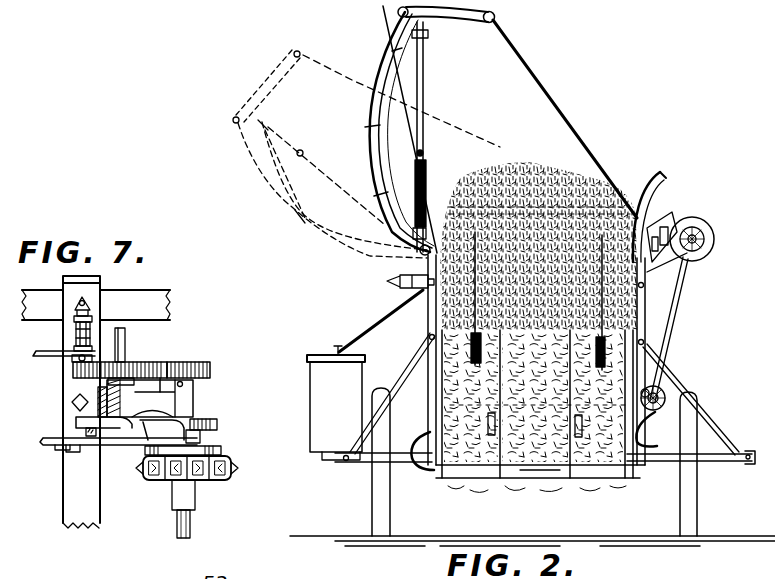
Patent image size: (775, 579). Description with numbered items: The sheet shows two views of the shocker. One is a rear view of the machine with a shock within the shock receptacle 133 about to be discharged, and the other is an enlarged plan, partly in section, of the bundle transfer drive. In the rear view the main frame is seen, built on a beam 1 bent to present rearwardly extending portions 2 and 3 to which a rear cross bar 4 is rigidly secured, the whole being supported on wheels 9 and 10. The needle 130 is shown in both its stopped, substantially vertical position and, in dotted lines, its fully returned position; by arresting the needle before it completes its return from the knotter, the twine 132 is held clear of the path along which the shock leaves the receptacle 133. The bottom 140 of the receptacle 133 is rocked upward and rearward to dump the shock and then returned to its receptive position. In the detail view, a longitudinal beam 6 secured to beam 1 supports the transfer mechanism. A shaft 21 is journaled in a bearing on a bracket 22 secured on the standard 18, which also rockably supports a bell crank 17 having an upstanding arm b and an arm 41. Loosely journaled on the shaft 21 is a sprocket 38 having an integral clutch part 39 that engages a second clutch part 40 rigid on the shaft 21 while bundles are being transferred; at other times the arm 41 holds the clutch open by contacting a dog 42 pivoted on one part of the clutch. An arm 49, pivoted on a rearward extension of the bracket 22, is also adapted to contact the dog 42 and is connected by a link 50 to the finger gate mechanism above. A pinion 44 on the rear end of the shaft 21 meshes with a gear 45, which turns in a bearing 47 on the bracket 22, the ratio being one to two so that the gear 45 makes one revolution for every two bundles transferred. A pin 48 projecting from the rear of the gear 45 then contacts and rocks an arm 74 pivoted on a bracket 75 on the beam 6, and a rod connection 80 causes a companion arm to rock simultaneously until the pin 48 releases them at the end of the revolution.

In FIG. 7, the beam 1 is at (164, 310).
In FIG. 7, the longitudinal beam 6 is at (70, 505).
In FIG. 7, the bracket 75 is at (95, 318).
In FIG. 7, the rod connection 80 is at (47, 352).
In FIG. 7, the arm 74 is at (72, 350).
In FIG. 7, the stud or pin 48 is at (125, 344).
In FIG. 7, the gear 45 is at (148, 366).
In FIG. 7, the bearing 47 is at (133, 407).
In FIG. 7, the pinion 44 is at (210, 366).
In FIG. 7, the bracket 22 is at (162, 403).
In FIG. 7, the standard 18 is at (98, 392).
In FIG. 7, the bell crank 17 is at (76, 419).
In FIG. 7, the upstanding arm b is at (82, 428).
In FIG. 7, the arm 41 is at (140, 421).
In FIG. 7, the link 50 is at (58, 447).
In FIG. 7, the arm 49 is at (72, 442).
In FIG. 7, the clutch part 40 is at (217, 425).
In FIG. 7, the dog 42 is at (200, 437).
In FIG. 7, the clutch part 39 is at (222, 451).
In FIG. 7, the sprocket 38 is at (232, 472).
In FIG. 7, the shaft 21 is at (190, 526).
In FIG. 2, the needle 130 is at (385, 104).
In FIG. 2, the twine 132 is at (347, 75).
In FIG. 2, the rearwardly extending portion 3 is at (337, 455).
In FIG. 2, the wheel 9 is at (378, 493).
In FIG. 2, the wheel 10 is at (697, 506).
In FIG. 2, the rearwardly extending portion 2 is at (743, 461).
In FIG. 2, the rear cross bar 4 is at (668, 462).
In FIG. 2, the shock receptacle 133 is at (540, 412).
In FIG. 2, the bottom 140 is at (538, 474).